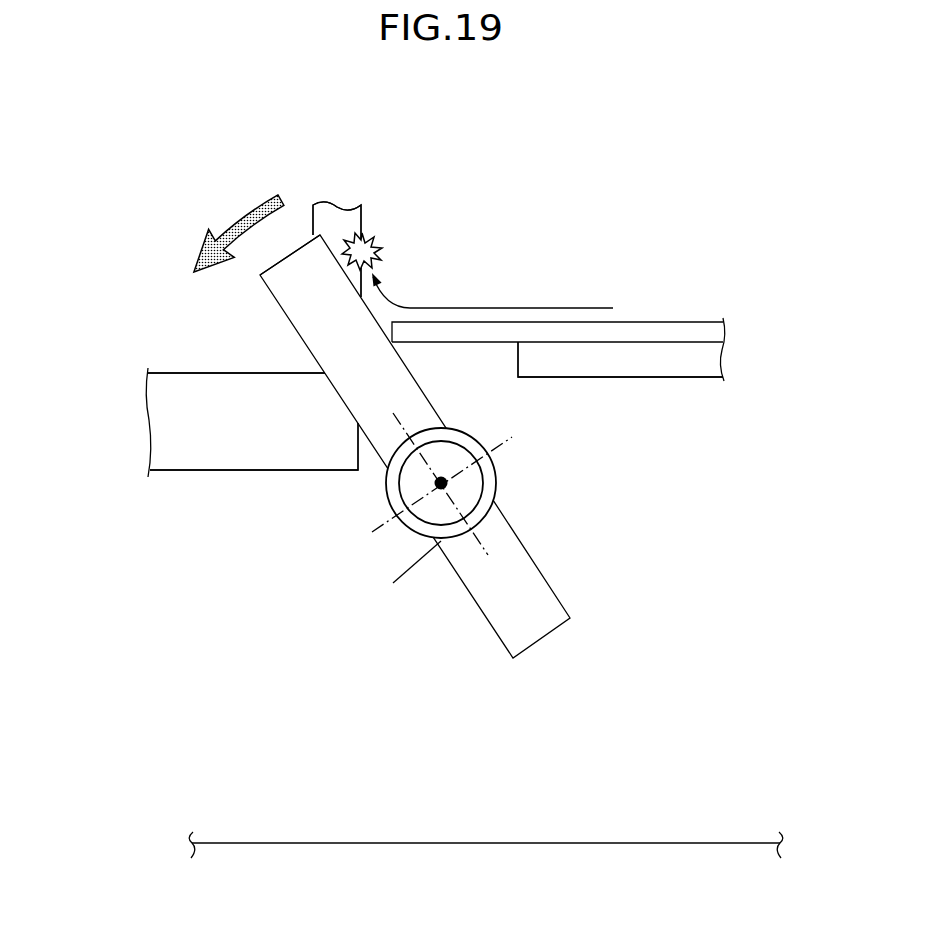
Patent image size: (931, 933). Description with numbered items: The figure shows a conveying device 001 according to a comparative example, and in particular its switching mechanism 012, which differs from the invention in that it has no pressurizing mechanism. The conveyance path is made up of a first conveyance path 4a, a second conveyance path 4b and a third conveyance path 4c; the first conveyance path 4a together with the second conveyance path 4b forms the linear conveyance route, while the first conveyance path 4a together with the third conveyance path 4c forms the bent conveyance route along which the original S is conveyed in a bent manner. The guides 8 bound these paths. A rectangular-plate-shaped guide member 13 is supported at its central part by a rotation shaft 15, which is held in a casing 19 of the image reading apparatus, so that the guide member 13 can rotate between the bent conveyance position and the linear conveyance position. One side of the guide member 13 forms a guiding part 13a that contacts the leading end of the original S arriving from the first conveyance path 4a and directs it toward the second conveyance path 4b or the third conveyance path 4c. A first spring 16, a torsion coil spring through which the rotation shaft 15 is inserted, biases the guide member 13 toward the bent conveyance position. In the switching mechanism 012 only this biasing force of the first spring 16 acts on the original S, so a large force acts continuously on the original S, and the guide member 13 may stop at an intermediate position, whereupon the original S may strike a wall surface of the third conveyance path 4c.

The switching mechanism 012 is at (227, 156).
The conveying device 001 is at (401, 118).
The first conveyance path 4a is at (846, 310).
The second conveyance path 4b is at (280, 362).
The third conveyance path 4c is at (489, 221).
The conveyance guide 8 is at (277, 376).
The original S is at (636, 320).
The guide member 13 is at (436, 371).
The guiding part 13a is at (287, 293).
The rotation shaft 15 is at (497, 483).
The first spring 16 is at (473, 437).
The casing 19 is at (375, 842).